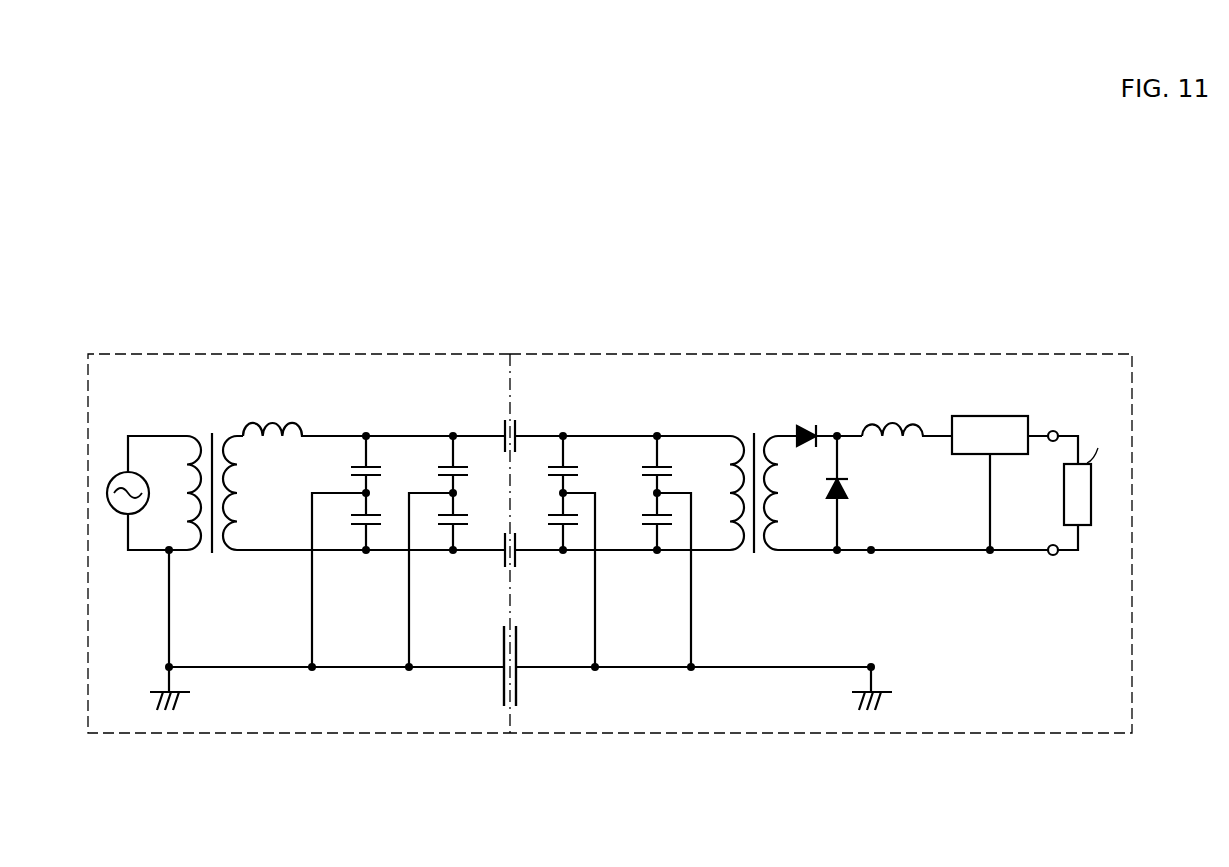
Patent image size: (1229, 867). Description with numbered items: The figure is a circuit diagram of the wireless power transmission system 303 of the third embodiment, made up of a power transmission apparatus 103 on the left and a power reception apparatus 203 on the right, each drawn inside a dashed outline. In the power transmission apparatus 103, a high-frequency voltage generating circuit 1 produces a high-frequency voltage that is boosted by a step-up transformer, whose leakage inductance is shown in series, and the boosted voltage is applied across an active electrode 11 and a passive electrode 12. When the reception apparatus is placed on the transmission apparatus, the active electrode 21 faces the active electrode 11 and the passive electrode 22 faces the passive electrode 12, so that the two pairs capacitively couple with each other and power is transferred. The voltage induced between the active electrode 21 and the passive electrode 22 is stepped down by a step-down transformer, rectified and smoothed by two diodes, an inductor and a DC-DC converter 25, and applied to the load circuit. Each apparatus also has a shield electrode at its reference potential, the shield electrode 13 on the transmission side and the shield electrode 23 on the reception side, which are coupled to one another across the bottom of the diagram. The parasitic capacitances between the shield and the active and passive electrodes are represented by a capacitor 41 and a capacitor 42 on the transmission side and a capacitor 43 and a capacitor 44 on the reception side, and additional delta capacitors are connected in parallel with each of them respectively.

The wireless power transmission system 303 is at (210, 240).
The power transmission apparatus 103 is at (115, 352).
The power reception apparatus 203 is at (1105, 352).
The high-frequency voltage generating circuit 1 is at (118, 478).
The active electrode 11 is at (504, 423).
The active electrode 21 is at (516, 423).
The passive electrode 12 is at (504, 565).
The passive electrode 22 is at (516, 565).
The shield electrode 13 is at (502, 680).
The shield electrode 23 is at (518, 680).
The capacitor 41 is at (395, 464).
The capacitor 42 is at (402, 521).
The capacitor 43 is at (602, 464).
The capacitor 44 is at (602, 521).
The DC-DC converter 25 is at (963, 415).